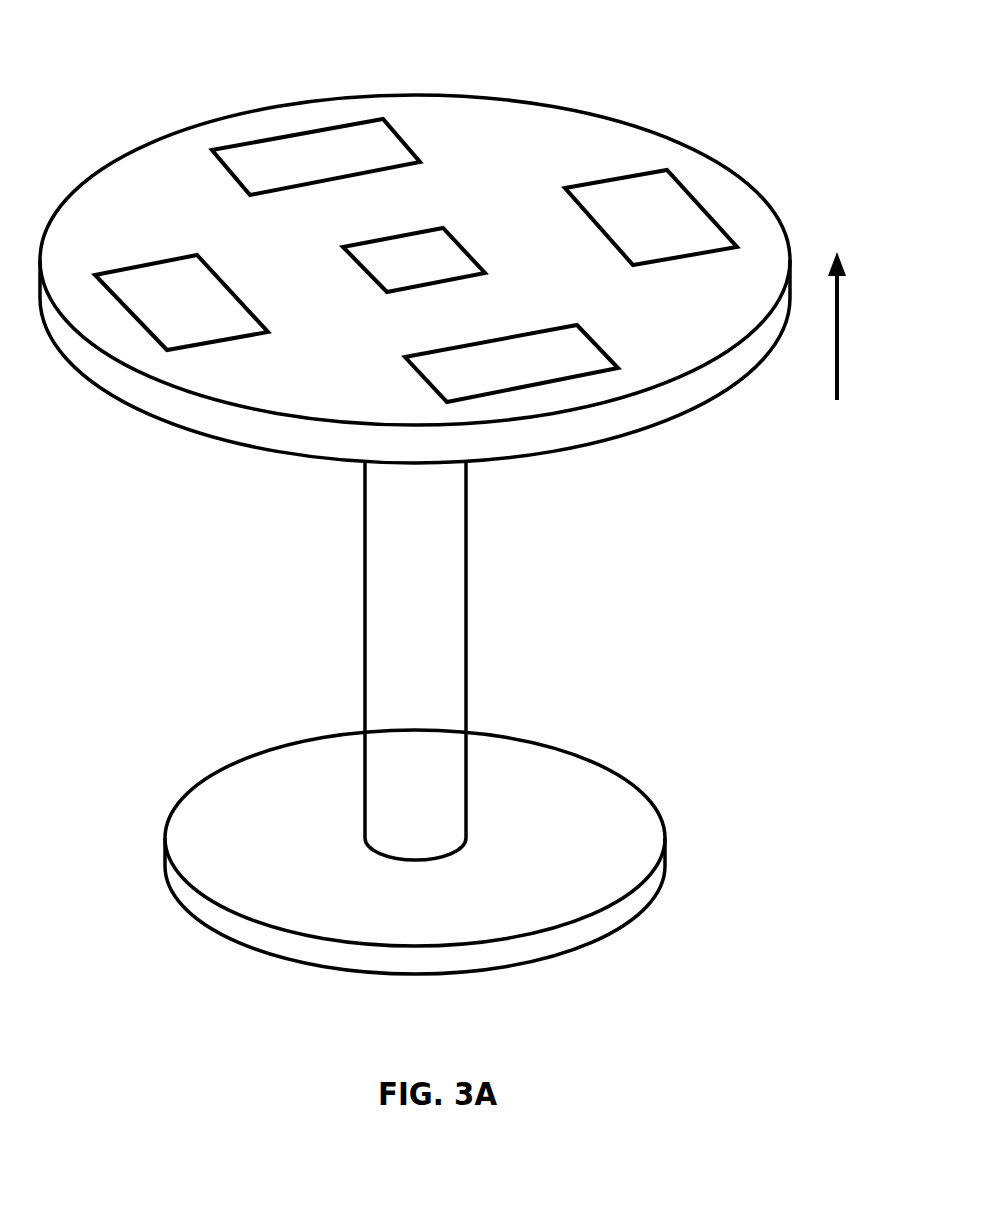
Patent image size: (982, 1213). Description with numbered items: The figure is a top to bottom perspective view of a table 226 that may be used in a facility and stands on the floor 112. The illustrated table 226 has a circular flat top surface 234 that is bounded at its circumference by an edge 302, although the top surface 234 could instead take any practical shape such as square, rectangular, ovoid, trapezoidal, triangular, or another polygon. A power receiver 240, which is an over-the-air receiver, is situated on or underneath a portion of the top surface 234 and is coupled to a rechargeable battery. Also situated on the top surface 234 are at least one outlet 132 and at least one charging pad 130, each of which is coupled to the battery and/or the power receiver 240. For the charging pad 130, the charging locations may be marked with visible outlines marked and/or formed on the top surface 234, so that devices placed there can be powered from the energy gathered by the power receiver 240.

The table 226 is at (146, 50).
The top surface 234 is at (363, 368).
The edge 302 is at (80, 352).
The power receiver 240 is at (415, 258).
The charging pad 130 is at (653, 217).
The outlet 132 is at (545, 385).
The floor 112 is at (758, 888).